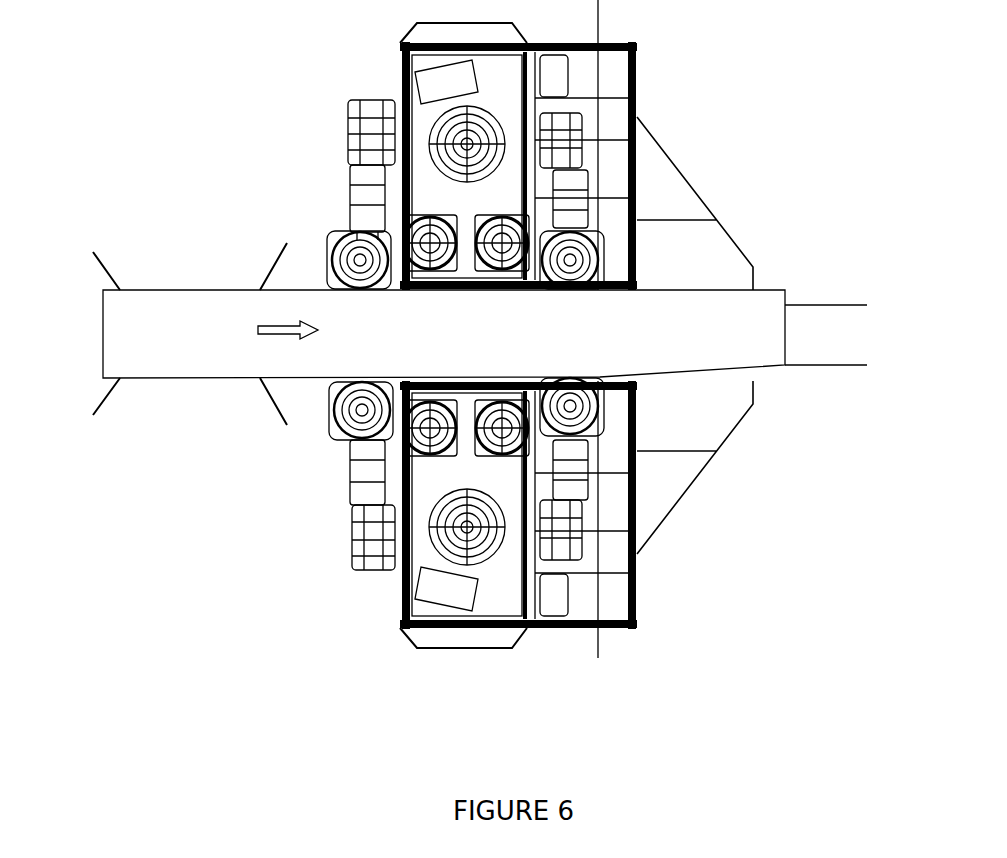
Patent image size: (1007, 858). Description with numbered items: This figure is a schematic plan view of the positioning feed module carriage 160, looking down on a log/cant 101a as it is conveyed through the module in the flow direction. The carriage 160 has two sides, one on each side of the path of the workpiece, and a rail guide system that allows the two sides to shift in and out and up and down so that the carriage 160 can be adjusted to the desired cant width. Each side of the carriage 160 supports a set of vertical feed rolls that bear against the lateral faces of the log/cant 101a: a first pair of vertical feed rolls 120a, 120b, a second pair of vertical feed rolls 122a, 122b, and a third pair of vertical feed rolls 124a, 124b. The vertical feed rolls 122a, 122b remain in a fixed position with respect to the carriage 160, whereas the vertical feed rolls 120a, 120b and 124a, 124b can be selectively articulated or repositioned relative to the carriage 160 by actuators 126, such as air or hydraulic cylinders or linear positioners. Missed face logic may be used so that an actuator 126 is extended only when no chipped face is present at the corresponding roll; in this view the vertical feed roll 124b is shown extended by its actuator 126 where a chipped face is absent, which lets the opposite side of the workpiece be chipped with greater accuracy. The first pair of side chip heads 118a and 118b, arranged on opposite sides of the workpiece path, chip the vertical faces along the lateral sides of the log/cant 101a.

The log/cant 101a is at (715, 320).
The chip head 118a is at (157, 272).
The chip head 118b is at (168, 410).
The vertical feed roll 120a is at (330, 228).
The vertical feed roll 120b is at (327, 433).
The vertical feed roll 122a is at (345, 200).
The vertical feed roll 122b is at (350, 483).
The vertical feed roll 124a is at (605, 243).
The vertical feed roll 124b is at (610, 420).
The actuator 126 is at (355, 142).
The carriage 160 is at (363, 635).